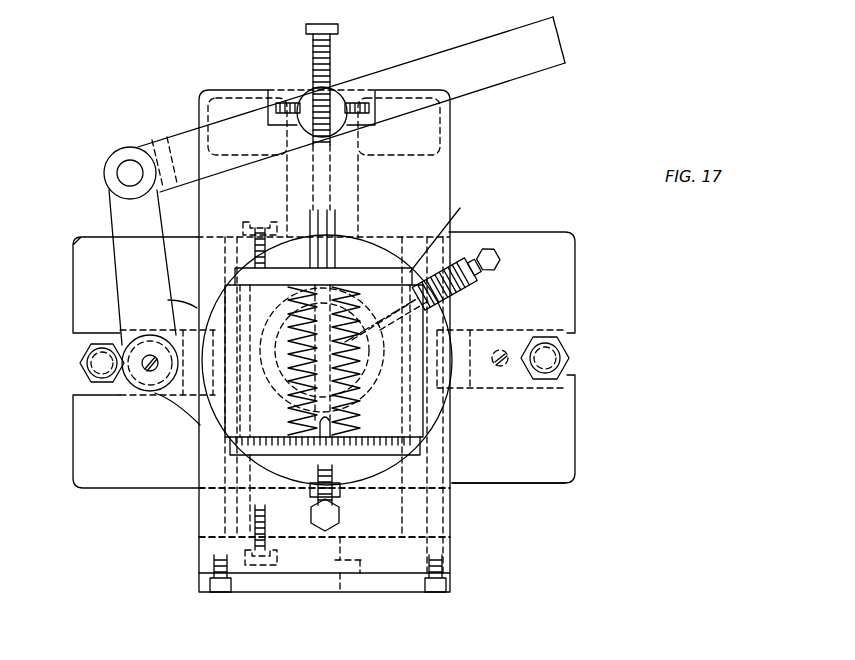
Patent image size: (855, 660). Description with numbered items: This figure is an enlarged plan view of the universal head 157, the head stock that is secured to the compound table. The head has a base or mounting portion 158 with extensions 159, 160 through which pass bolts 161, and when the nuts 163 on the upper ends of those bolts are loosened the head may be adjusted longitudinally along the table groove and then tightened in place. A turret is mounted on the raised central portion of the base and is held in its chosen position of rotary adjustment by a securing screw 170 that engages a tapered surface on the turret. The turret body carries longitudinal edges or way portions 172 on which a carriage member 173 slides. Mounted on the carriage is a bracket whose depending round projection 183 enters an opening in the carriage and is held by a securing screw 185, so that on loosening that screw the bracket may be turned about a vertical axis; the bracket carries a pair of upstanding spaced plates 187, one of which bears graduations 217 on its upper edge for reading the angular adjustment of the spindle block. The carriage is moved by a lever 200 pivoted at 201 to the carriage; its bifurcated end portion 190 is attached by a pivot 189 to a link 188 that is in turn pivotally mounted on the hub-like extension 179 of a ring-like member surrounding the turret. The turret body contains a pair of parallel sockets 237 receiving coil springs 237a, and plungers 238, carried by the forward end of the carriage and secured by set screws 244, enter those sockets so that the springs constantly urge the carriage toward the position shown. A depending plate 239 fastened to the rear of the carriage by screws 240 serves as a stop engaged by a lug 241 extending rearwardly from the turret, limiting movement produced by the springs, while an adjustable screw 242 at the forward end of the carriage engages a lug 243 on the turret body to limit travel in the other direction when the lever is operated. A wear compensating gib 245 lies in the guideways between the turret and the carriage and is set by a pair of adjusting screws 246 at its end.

The universal head 157 is at (550, 212).
The base or mounting portion 158 is at (597, 453).
The extension 159 is at (105, 482).
The extension 160 is at (565, 480).
The bolt 161 is at (88, 358).
The nut 163 is at (82, 378).
The securing screw 170 is at (342, 515).
The edges or way portions 172 is at (440, 490).
The carriage member 173 is at (458, 527).
The hub-like portion or extension 179 is at (170, 405).
The round projection 183 is at (452, 318).
The securing screw 185 is at (497, 268).
The upstanding spaced plates 187 is at (460, 208).
The link 188 is at (112, 210).
The pivot 189 is at (117, 173).
The bifurcated end portion 190 is at (150, 140).
The lever 200 is at (535, 72).
The pivot 201 is at (312, 98).
The graduations 217 is at (430, 434).
The sockets 237 is at (292, 315).
The coil springs 237a is at (348, 252).
The plungers 238 is at (322, 192).
The depending plate 239 is at (304, 590).
The screws 240 is at (222, 595).
The lug 241 is at (360, 578).
The adjustable screw 242 is at (334, 46).
The lug 243 is at (340, 215).
The set screws 244 is at (278, 100).
The wear compensating gib 245 is at (245, 430).
The adjusting screws 246 is at (263, 222).